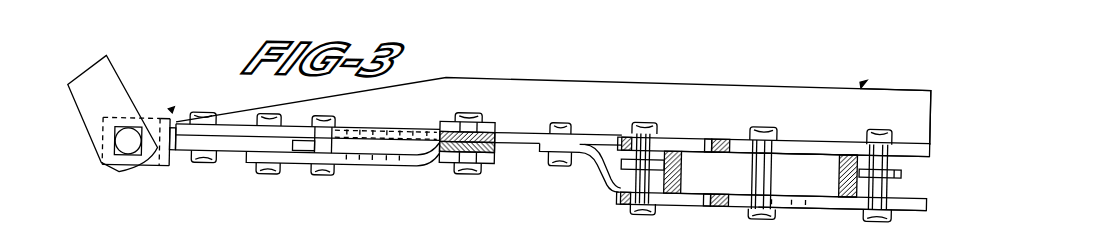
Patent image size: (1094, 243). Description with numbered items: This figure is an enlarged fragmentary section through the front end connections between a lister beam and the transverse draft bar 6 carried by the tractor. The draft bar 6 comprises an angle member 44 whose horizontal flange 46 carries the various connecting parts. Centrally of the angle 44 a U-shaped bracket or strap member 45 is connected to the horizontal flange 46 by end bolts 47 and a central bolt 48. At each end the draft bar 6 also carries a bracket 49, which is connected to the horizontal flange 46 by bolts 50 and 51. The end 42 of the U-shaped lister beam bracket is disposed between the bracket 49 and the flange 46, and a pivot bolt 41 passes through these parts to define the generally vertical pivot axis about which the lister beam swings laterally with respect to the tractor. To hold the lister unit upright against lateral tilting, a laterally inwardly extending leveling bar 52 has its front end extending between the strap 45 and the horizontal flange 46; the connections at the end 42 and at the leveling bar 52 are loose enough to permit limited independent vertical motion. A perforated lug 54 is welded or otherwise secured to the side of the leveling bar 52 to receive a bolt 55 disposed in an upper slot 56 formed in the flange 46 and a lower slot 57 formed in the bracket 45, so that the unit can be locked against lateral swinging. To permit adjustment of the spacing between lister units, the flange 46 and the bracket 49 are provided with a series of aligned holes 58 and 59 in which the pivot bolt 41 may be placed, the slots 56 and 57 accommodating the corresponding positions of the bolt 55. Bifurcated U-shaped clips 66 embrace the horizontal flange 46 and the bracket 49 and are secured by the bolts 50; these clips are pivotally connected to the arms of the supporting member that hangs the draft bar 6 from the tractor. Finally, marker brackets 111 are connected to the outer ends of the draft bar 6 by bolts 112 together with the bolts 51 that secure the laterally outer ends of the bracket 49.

The transverse draft bar 6 is at (860, 74).
The pivot bolt 41 is at (320, 166).
The end of bracket 42 is at (293, 139).
The angle member 44 is at (726, 97).
The U-shaped bracket or strap member 45 is at (788, 186).
The horizontal flange 46 is at (788, 135).
The end bolts 47 is at (560, 114).
The central bolt 48 is at (762, 115).
The bracket 49 is at (414, 158).
The bolts 50 is at (470, 106).
The bolts 51 is at (265, 166).
The leveling bar 52 is at (685, 172).
The perforated lug 54 is at (628, 153).
The bolt 55 is at (645, 112).
The upper slot 56 is at (682, 128).
The lower slot 57 is at (820, 130).
The aligned holes 58 is at (342, 123).
The aligned holes 59 is at (372, 157).
The bifurcated clips 66 is at (493, 120).
The brackets 111 is at (172, 113).
The bolts 112 is at (205, 162).